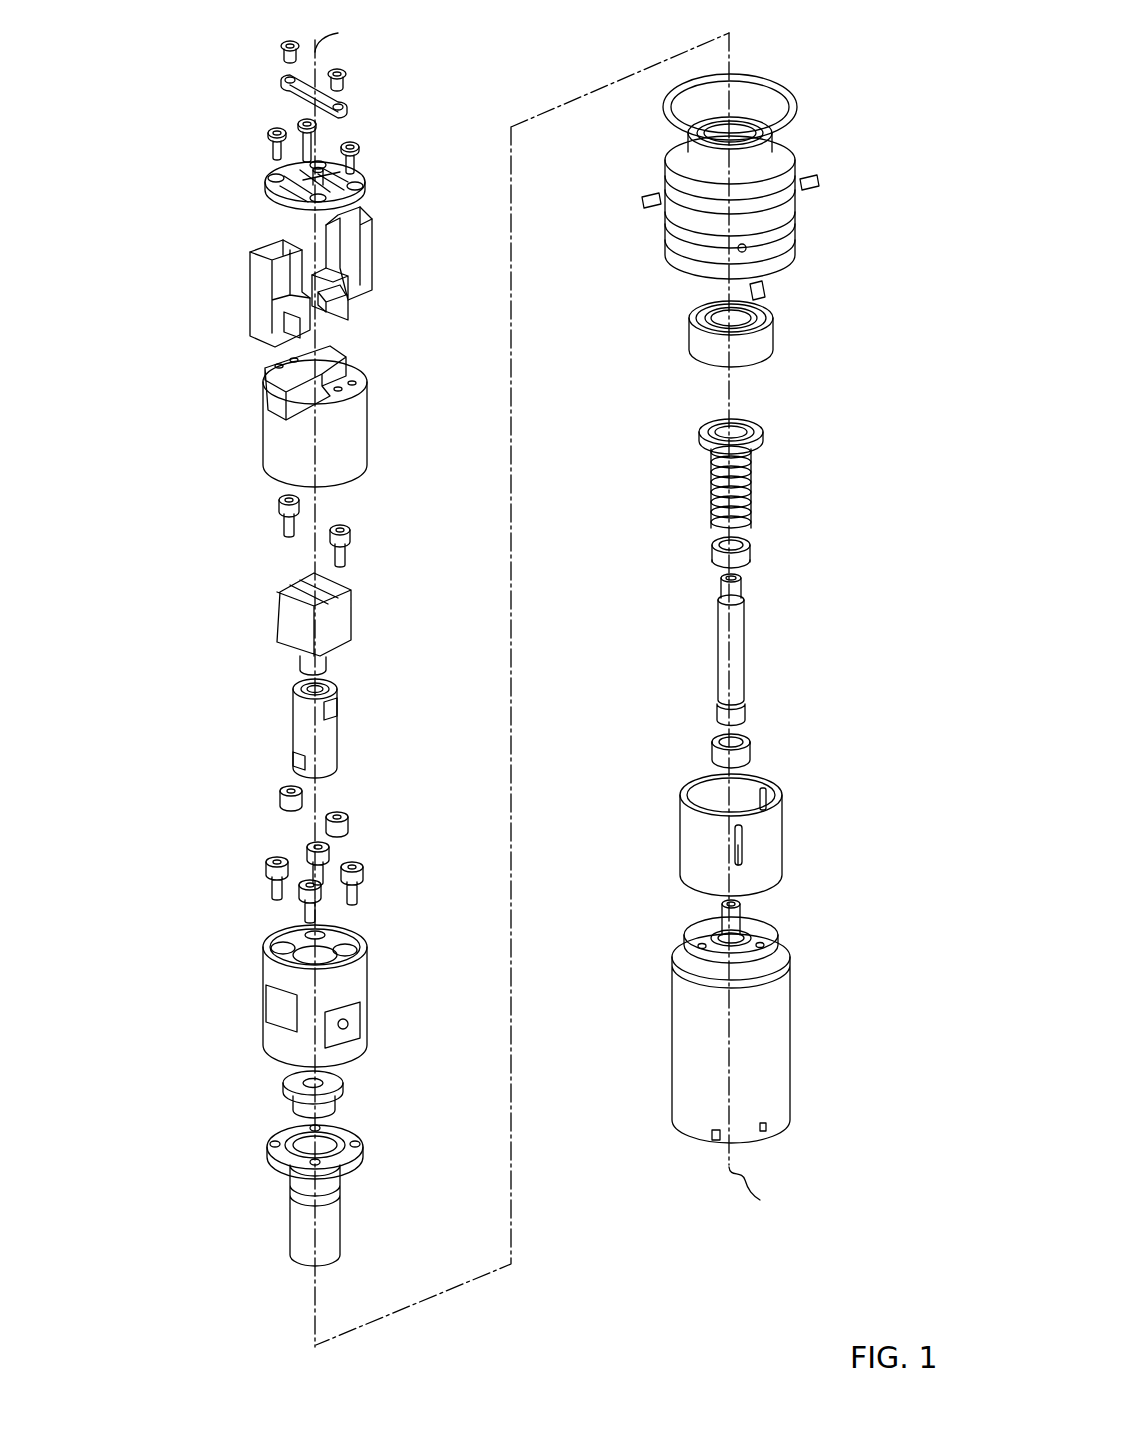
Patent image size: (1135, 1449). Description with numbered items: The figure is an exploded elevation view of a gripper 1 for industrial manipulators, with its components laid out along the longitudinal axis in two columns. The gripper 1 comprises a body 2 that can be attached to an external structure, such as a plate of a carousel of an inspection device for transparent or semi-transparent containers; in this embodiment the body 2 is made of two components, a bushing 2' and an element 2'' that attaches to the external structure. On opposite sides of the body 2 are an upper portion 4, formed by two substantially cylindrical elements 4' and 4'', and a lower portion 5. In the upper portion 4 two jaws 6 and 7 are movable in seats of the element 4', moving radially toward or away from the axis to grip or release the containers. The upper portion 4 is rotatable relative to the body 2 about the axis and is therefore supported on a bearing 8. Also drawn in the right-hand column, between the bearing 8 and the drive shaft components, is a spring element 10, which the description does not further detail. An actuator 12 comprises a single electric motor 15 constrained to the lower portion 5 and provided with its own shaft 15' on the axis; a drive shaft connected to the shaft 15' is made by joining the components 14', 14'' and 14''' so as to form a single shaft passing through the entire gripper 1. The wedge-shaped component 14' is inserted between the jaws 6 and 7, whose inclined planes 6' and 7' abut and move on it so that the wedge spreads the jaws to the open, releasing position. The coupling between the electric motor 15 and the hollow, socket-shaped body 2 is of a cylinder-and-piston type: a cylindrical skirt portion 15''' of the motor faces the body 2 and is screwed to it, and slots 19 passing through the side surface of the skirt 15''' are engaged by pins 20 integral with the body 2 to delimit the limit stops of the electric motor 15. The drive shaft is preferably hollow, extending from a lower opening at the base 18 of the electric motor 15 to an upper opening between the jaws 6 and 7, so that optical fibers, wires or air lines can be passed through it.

The gripper 1 is at (170, 24).
The body 2 is at (484, 643).
The bushing 2' is at (279, 1195).
The element attachable to the external structure 2'' is at (763, 176).
The upper portion 4 is at (216, 579).
The first cylindrical element 4' is at (276, 416).
The second cylindrical element 4'' is at (276, 996).
The lower portion 5 is at (905, 1127).
The jaw 6 is at (244, 293).
The inclined plane of jaw 6' is at (357, 348).
The jaw 7 is at (367, 263).
The inclined plane of jaw 7' is at (374, 316).
The bearing 8 is at (697, 343).
The spring 10 is at (712, 516).
The actuator 12 is at (790, 666).
The wedge-shaped component of drive shaft 14' is at (354, 624).
The drive shaft component 14'' is at (367, 728).
The drive shaft component 14''' is at (682, 650).
The electric motor 15 is at (688, 1030).
The motor shaft 15' is at (661, 913).
The cylindrical skirt portion 15''' is at (682, 835).
The base of the electric motor 18 is at (695, 1137).
The slots 19 is at (768, 797).
The pins 20 is at (641, 199).